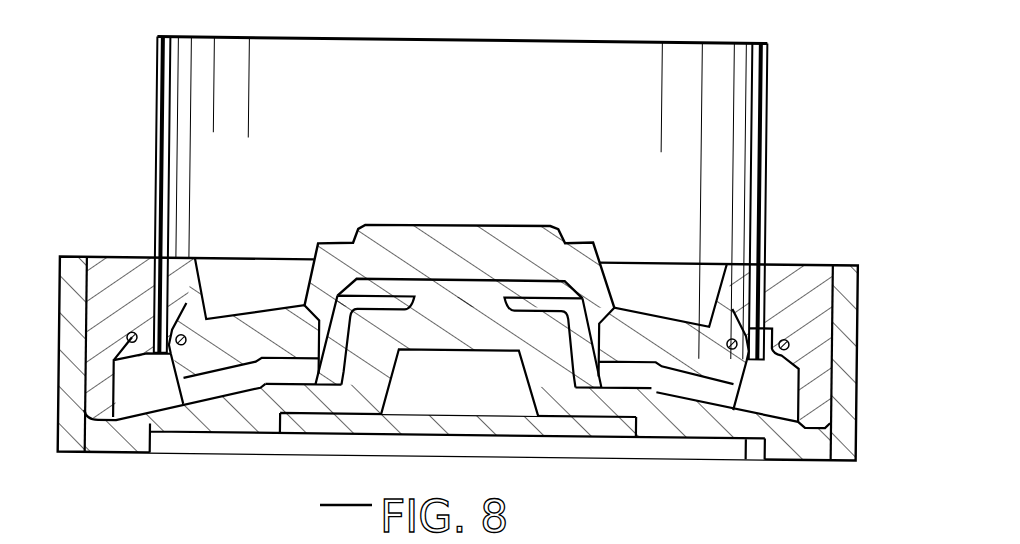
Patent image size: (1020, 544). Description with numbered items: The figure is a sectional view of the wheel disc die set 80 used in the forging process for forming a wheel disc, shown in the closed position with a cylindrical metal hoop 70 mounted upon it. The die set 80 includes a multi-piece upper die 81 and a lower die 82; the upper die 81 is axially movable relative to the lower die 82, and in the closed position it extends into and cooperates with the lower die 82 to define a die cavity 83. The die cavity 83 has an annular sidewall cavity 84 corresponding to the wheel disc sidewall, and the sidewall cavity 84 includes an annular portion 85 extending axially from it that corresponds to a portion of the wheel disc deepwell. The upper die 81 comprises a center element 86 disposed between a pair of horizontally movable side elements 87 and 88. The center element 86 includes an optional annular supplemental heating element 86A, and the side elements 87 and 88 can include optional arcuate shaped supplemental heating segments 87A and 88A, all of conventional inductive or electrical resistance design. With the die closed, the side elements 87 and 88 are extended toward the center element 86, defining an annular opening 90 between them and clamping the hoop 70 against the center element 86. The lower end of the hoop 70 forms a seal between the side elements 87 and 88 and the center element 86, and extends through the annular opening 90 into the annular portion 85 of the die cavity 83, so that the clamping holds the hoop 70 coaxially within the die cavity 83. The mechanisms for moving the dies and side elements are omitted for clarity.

The cylindrical hoop 70 is at (767, 86).
The wheel disc die set 80 is at (92, 189).
The upper die 81 is at (318, 206).
The lower die 82 is at (72, 420).
The die cavity 83 is at (583, 325).
The annular sidewall cavity 84 is at (763, 394).
The annular portion 85 is at (778, 363).
The center element 86 is at (435, 230).
The annular supplemental heating element 86A is at (183, 341).
The side element 87 is at (112, 272).
The arcuate supplemental heating segment 87A is at (133, 340).
The side element 88 is at (787, 269).
The arcuate supplemental heating segment 88A is at (785, 339).
The annular opening 90 is at (174, 251).